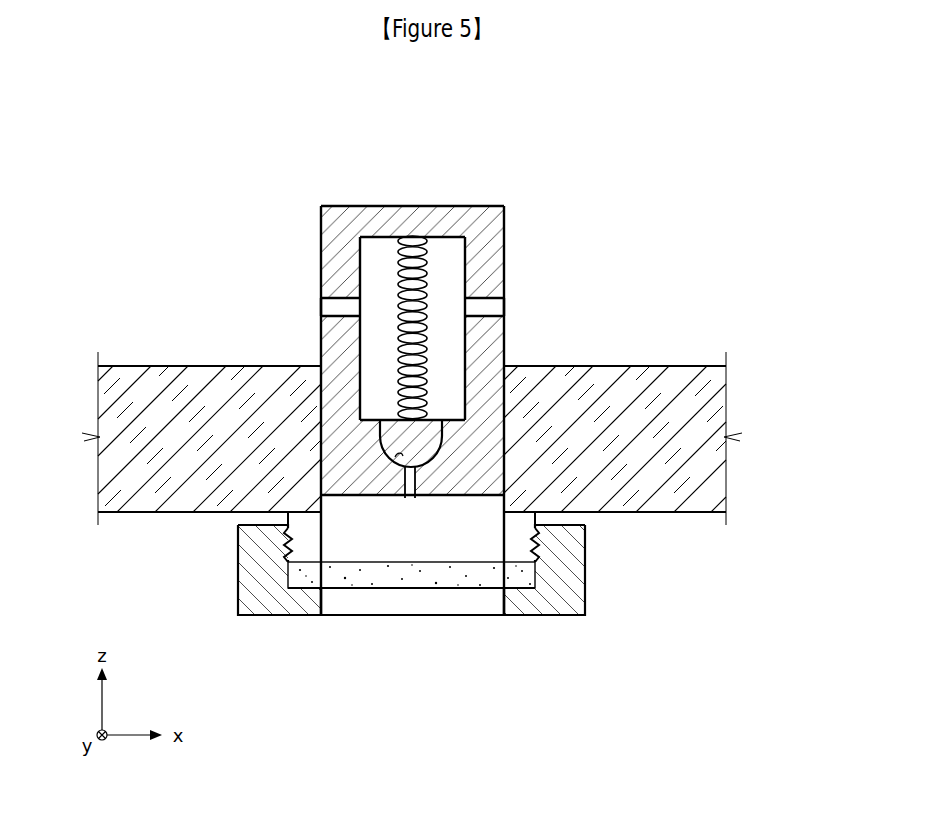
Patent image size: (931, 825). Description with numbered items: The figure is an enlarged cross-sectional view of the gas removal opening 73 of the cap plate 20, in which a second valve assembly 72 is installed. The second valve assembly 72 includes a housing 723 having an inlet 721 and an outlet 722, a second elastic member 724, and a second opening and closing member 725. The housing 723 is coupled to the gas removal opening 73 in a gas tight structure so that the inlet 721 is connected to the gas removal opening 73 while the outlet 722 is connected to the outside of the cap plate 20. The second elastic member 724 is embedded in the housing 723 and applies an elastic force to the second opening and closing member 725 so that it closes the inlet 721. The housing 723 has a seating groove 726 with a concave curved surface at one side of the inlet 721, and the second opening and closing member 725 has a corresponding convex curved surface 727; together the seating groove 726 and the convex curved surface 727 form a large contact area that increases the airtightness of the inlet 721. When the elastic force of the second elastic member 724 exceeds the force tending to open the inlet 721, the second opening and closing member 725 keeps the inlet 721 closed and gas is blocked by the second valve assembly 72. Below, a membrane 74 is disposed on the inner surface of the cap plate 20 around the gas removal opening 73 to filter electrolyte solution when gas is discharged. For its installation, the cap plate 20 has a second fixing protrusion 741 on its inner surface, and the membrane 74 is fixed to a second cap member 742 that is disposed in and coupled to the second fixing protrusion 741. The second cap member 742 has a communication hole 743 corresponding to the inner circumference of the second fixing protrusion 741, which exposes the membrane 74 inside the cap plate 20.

The cap plate 20 is at (708, 393).
The second valve assembly 72 is at (439, 380).
The gas removal opening 73 is at (477, 533).
The membrane 74 is at (346, 578).
The inlet 721 is at (413, 499).
The outlet 722 is at (492, 306).
The housing 723 is at (492, 241).
The second elastic member 724 is at (398, 272).
The second opening and closing member 725 is at (422, 445).
The seating groove 726 is at (400, 456).
The convex curved surface 727 is at (435, 460).
The second fixing protrusion 741 is at (513, 558).
The second cap member 742 is at (572, 597).
The communication hole 743 is at (482, 606).